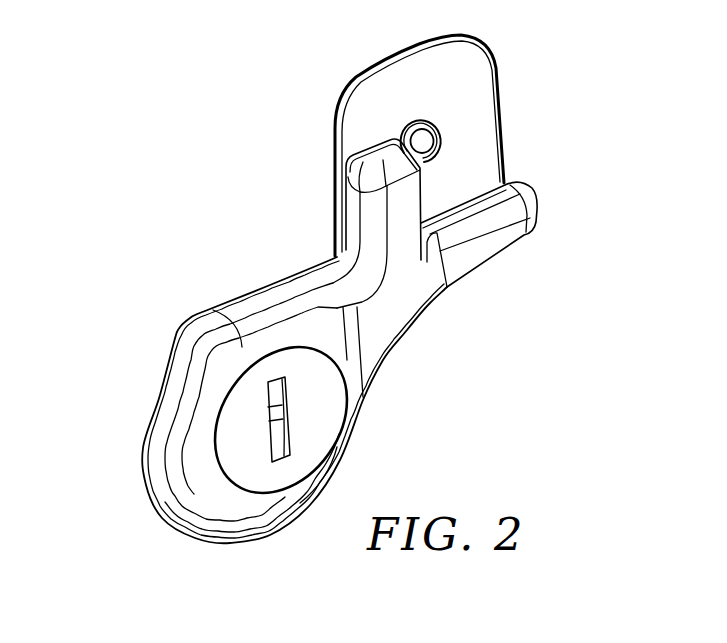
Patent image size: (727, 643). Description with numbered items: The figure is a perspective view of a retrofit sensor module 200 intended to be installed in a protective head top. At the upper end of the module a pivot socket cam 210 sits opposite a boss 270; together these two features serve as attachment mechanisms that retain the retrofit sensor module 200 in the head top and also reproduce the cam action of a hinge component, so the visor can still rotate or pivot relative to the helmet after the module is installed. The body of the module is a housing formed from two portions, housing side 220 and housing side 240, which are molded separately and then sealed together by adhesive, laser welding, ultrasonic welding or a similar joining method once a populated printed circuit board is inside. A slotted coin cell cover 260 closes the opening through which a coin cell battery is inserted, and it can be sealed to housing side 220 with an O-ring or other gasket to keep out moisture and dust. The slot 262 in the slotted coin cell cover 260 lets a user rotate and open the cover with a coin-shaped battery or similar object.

The retrofit sensor module 200 is at (197, 138).
The pivot socket cam 210 is at (341, 92).
The housing side 220 is at (388, 320).
The housing side 240 is at (183, 324).
The slotted coin cell cover 260 is at (257, 440).
The slot 262 is at (287, 418).
The boss 270 is at (434, 139).